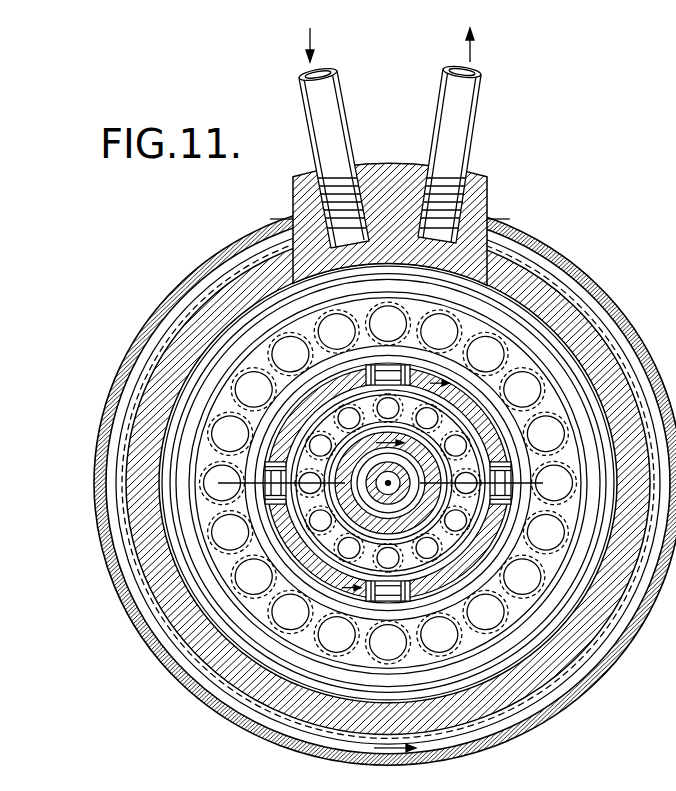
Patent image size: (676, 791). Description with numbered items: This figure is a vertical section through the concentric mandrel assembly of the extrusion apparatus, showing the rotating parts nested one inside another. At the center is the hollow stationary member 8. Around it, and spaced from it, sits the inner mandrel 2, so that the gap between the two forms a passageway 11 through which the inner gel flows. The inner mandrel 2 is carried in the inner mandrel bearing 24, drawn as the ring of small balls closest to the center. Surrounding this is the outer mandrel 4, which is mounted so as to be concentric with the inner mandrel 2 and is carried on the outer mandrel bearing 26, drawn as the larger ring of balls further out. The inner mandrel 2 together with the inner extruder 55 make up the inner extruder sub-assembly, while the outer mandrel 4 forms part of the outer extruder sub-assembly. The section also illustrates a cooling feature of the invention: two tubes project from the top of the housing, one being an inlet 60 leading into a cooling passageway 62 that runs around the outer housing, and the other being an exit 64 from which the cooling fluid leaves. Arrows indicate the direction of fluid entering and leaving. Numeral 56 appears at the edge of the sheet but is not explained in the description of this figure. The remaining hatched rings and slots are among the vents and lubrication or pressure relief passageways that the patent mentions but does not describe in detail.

The inner mandrel 2 is at (222, 482).
The outer mandrel 4 is at (505, 556).
The hollow stationary member 8 is at (401, 492).
The passageway 11 is at (554, 482).
The inner mandrel bearing 24 is at (390, 562).
The outer mandrel bearing 26 is at (453, 632).
The inner extruder 55 is at (656, 745).
The housing section 56 is at (654, 784).
The inlet 60 is at (328, 109).
The cooling passageway 62 is at (590, 300).
The exit 64 is at (462, 109).